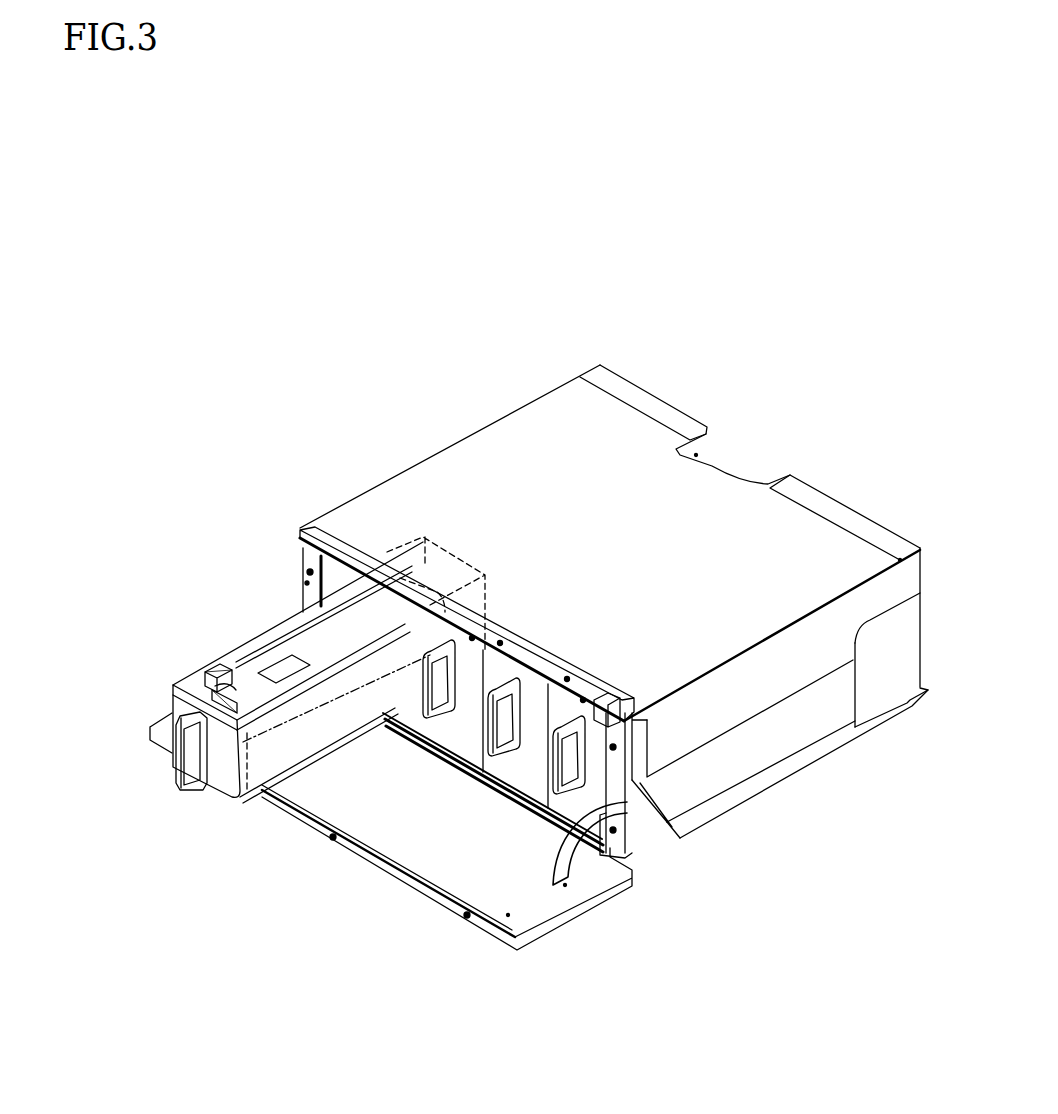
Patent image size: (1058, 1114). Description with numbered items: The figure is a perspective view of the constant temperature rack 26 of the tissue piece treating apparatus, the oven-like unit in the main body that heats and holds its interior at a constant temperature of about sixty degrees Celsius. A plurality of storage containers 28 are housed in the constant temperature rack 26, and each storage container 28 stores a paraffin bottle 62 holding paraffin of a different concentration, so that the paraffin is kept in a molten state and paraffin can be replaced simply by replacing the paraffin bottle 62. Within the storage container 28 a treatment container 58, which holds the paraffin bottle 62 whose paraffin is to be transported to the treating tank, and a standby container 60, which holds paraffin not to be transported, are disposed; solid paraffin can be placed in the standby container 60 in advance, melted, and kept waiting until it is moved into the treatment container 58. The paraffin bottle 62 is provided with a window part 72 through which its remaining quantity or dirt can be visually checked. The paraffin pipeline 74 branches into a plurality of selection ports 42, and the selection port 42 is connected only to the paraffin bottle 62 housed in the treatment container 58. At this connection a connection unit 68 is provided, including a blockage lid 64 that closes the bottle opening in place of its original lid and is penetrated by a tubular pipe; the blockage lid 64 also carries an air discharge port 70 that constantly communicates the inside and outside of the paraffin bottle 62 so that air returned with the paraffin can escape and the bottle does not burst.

The constant temperature rack 26 is at (802, 368).
The storage container 28 is at (325, 754).
The treatment container 58 is at (180, 697).
The standby container 60 is at (597, 783).
The paraffin bottle 62 is at (240, 798).
The blockage lid 64 is at (205, 678).
The connection unit 68 is at (153, 623).
The air discharge port 70 is at (237, 663).
The window part 72 is at (283, 663).
The paraffin pipeline 74 is at (233, 577).
The selection port 42 is at (287, 665).